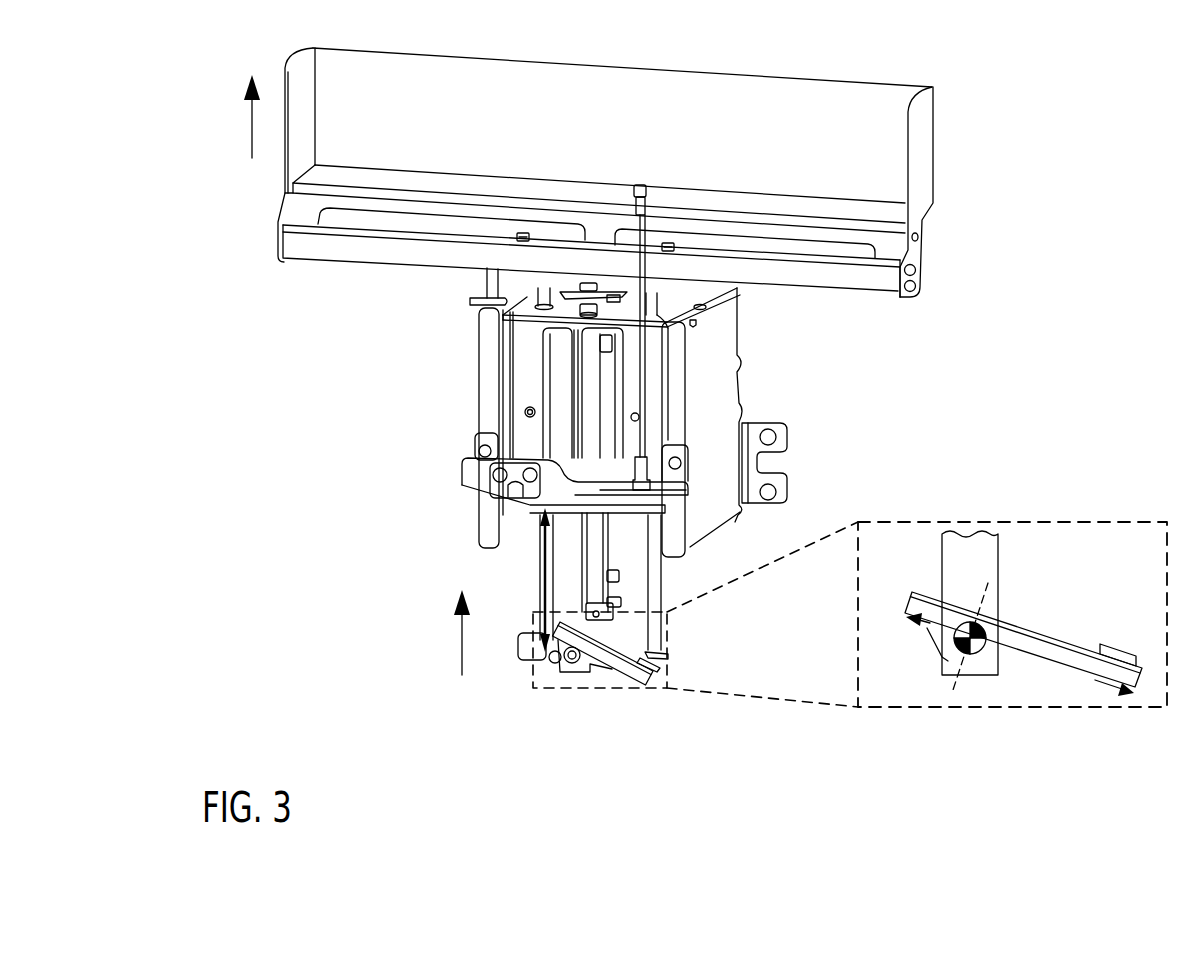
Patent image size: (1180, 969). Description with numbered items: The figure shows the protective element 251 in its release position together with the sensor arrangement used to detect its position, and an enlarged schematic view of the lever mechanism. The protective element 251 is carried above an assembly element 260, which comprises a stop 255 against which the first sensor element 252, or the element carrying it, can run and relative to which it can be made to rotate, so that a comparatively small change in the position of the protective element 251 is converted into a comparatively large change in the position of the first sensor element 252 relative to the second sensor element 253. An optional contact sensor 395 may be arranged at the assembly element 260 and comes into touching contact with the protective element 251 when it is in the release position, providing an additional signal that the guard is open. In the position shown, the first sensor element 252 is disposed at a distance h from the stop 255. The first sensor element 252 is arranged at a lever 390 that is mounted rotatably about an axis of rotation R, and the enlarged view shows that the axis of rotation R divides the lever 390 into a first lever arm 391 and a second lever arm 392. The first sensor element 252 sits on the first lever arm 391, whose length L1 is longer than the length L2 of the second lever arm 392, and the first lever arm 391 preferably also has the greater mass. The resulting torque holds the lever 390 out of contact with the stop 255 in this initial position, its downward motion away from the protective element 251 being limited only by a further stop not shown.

The protective element 251 is at (921, 129).
The first sensor element 252 is at (653, 650).
The second sensor element 253 is at (684, 483).
The stop 255 is at (485, 505).
The assembly element 260 is at (732, 375).
The lever 390 is at (640, 686).
The first lever arm 391 is at (1036, 642).
The second lever arm 392 is at (930, 607).
The contact sensor 395 is at (478, 289).
The axis of rotation R is at (572, 664).
The distance h is at (545, 574).
The length of first lever arm L1 is at (1089, 684).
The length of second lever arm L2 is at (932, 630).